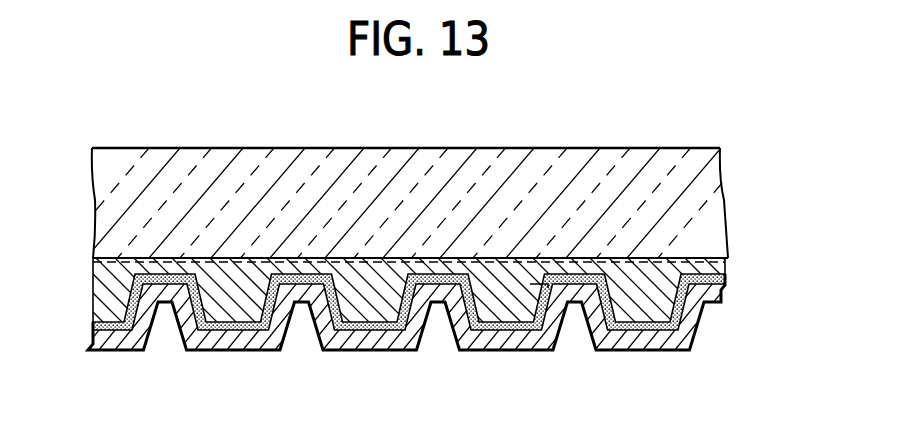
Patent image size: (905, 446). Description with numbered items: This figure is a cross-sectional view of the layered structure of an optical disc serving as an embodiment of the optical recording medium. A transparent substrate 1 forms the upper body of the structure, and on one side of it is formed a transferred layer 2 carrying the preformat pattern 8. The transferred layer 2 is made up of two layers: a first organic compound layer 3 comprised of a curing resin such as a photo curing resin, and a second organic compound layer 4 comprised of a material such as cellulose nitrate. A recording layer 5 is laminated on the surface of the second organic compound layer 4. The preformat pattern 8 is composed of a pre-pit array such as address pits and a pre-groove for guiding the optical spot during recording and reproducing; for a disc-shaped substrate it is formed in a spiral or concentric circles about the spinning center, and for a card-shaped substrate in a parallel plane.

The transparent substrate 1 is at (652, 167).
The transferred layer 2 is at (424, 286).
The first organic compound layer 3 is at (727, 264).
The second organic compound layer 4 is at (436, 302).
The recording layer 5 is at (522, 344).
The preformat pattern 8 is at (546, 291).